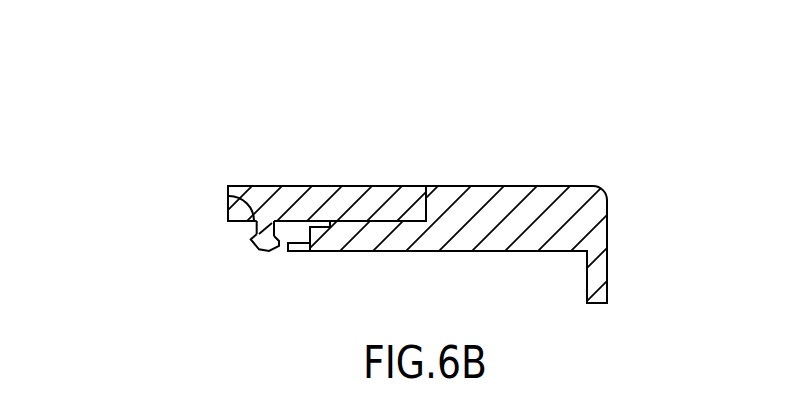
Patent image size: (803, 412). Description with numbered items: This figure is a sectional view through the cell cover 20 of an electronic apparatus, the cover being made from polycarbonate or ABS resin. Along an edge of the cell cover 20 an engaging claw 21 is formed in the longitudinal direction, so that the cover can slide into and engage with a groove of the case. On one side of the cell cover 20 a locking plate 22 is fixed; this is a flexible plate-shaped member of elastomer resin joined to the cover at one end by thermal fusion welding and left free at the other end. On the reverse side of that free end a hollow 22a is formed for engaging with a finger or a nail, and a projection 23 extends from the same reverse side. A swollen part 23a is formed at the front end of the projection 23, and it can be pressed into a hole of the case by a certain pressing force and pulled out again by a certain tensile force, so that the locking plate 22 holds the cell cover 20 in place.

The cell cover 20 is at (595, 216).
The engaging claw 21 is at (295, 249).
The locking plate 22 is at (352, 192).
The hollow 22a is at (234, 213).
The projection 23 is at (228, 241).
The swollen part 23a is at (256, 244).